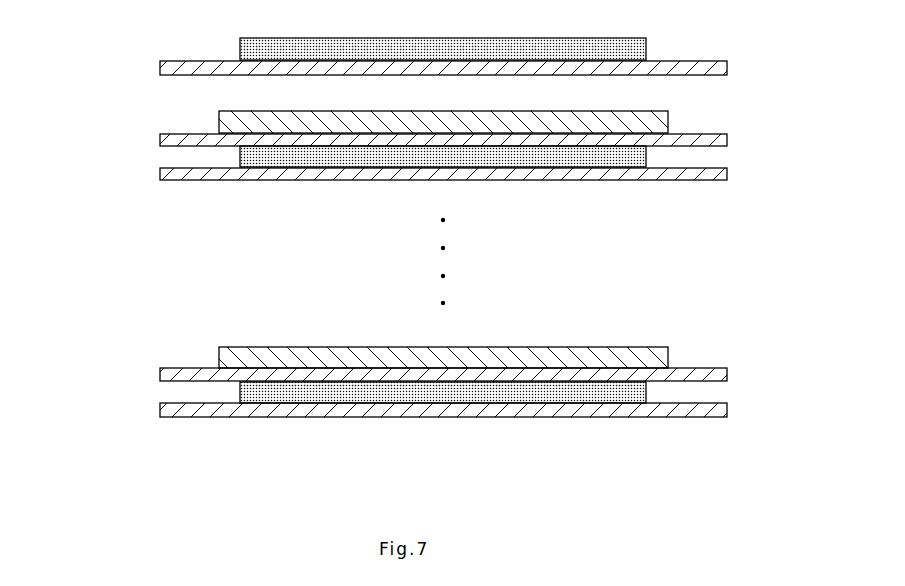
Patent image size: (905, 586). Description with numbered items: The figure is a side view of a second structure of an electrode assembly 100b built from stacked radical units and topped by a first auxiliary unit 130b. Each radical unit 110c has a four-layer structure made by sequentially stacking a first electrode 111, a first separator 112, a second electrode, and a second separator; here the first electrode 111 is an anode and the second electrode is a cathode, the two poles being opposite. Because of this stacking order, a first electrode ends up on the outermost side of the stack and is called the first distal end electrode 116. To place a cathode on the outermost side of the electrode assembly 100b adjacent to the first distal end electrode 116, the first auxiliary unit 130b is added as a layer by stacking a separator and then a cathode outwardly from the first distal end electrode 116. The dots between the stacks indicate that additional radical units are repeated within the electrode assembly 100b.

The electrode assembly 100b is at (420, 227).
The first auxiliary unit 130b is at (377, 53).
The radical unit 110c is at (377, 380).
The first electrode 111 is at (248, 358).
The first separator 112 is at (168, 378).
The first distal end electrode 116 is at (220, 123).